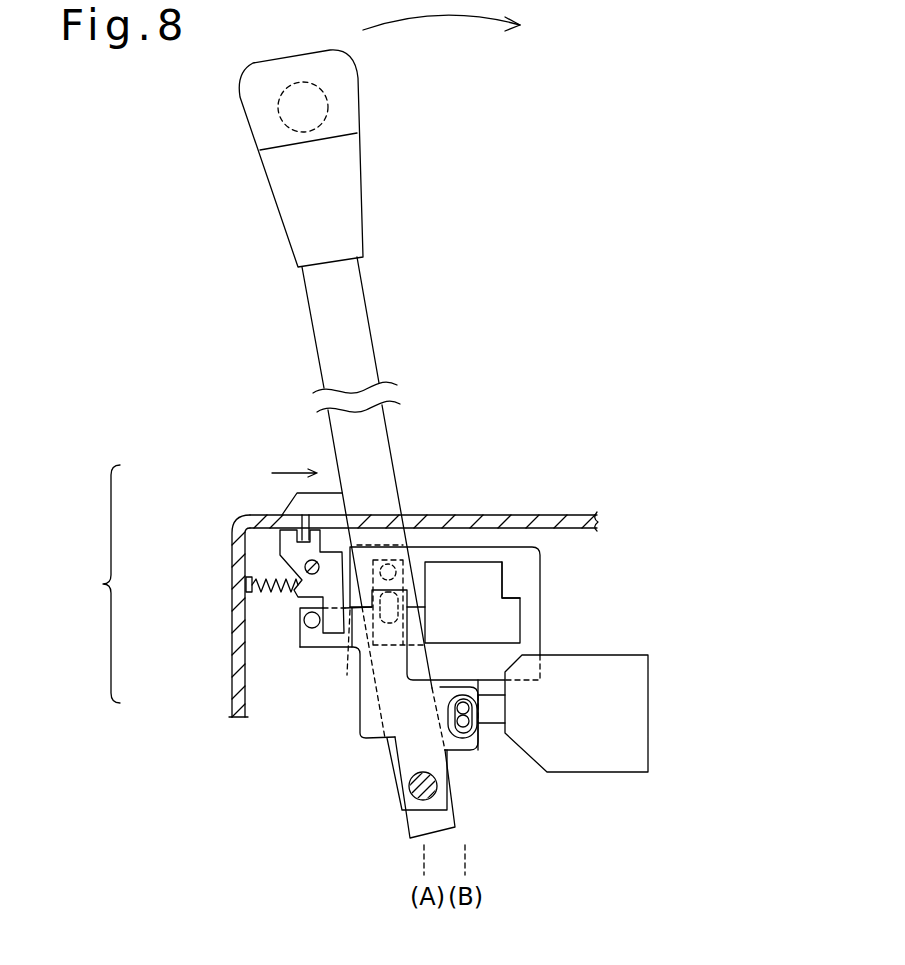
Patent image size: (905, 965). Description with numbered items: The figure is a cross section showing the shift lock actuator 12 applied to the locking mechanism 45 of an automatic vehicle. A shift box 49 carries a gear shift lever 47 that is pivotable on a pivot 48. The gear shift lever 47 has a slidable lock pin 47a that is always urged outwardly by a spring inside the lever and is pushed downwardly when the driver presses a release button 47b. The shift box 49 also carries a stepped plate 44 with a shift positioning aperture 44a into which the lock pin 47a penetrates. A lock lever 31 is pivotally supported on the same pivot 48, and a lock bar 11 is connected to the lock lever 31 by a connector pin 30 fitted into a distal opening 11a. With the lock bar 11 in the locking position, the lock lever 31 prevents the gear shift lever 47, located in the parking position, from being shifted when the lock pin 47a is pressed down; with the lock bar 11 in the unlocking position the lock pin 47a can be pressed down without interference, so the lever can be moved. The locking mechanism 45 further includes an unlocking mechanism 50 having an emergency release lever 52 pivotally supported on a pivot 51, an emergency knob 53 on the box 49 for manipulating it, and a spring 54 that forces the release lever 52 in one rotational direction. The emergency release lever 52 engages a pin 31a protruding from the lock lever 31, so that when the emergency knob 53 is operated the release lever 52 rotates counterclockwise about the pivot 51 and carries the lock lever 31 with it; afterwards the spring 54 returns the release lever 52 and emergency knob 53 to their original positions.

The gear shift lever 47 is at (377, 433).
The lock pin 47a is at (385, 560).
The release button 47b is at (328, 100).
The locking mechanism 45 is at (490, 537).
The shift box 49 is at (552, 518).
The emergency knob 53 is at (287, 503).
The pivot 51 is at (305, 563).
The spring 54 is at (260, 578).
The emergency release lever 52 is at (298, 600).
The pin 31a is at (304, 621).
The unlocking mechanism 50 is at (92, 584).
The stepped plate 44 is at (530, 568).
The shift positioning aperture 44a is at (492, 603).
The shift lock actuator 12 is at (630, 665).
The distal opening 11a is at (465, 700).
The lock bar 11 is at (490, 717).
The lock lever 31 is at (362, 706).
The pivot 48 is at (408, 787).
The connector pin 30 is at (463, 727).